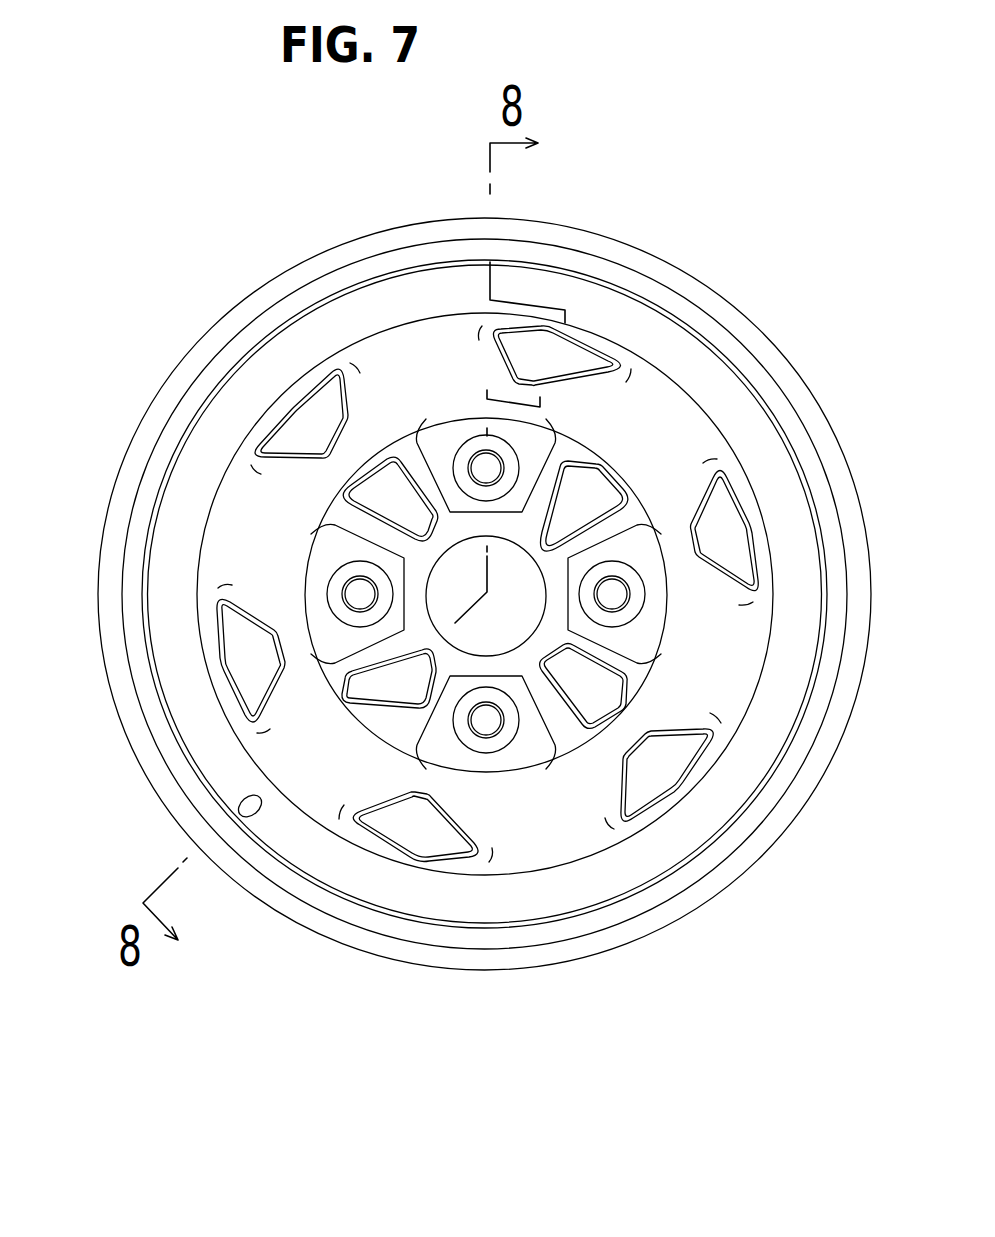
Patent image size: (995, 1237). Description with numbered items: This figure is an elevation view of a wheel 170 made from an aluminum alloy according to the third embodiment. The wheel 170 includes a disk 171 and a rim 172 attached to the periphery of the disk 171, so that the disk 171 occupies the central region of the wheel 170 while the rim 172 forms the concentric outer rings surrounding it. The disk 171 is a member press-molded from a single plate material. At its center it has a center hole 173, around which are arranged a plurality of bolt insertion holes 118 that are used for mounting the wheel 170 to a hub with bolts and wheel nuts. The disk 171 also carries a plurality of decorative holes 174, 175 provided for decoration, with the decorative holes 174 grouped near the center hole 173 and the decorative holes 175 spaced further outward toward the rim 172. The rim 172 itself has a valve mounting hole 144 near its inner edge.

The wheel 170 is at (213, 215).
The disk 171 is at (419, 361).
The rim 172 is at (208, 435).
The center hole 173 is at (525, 622).
The decorative holes 174 is at (600, 511).
The decorative holes 175 is at (296, 416).
The bolt insertion holes 118 is at (489, 456).
The valve mounting hole 144 is at (254, 816).